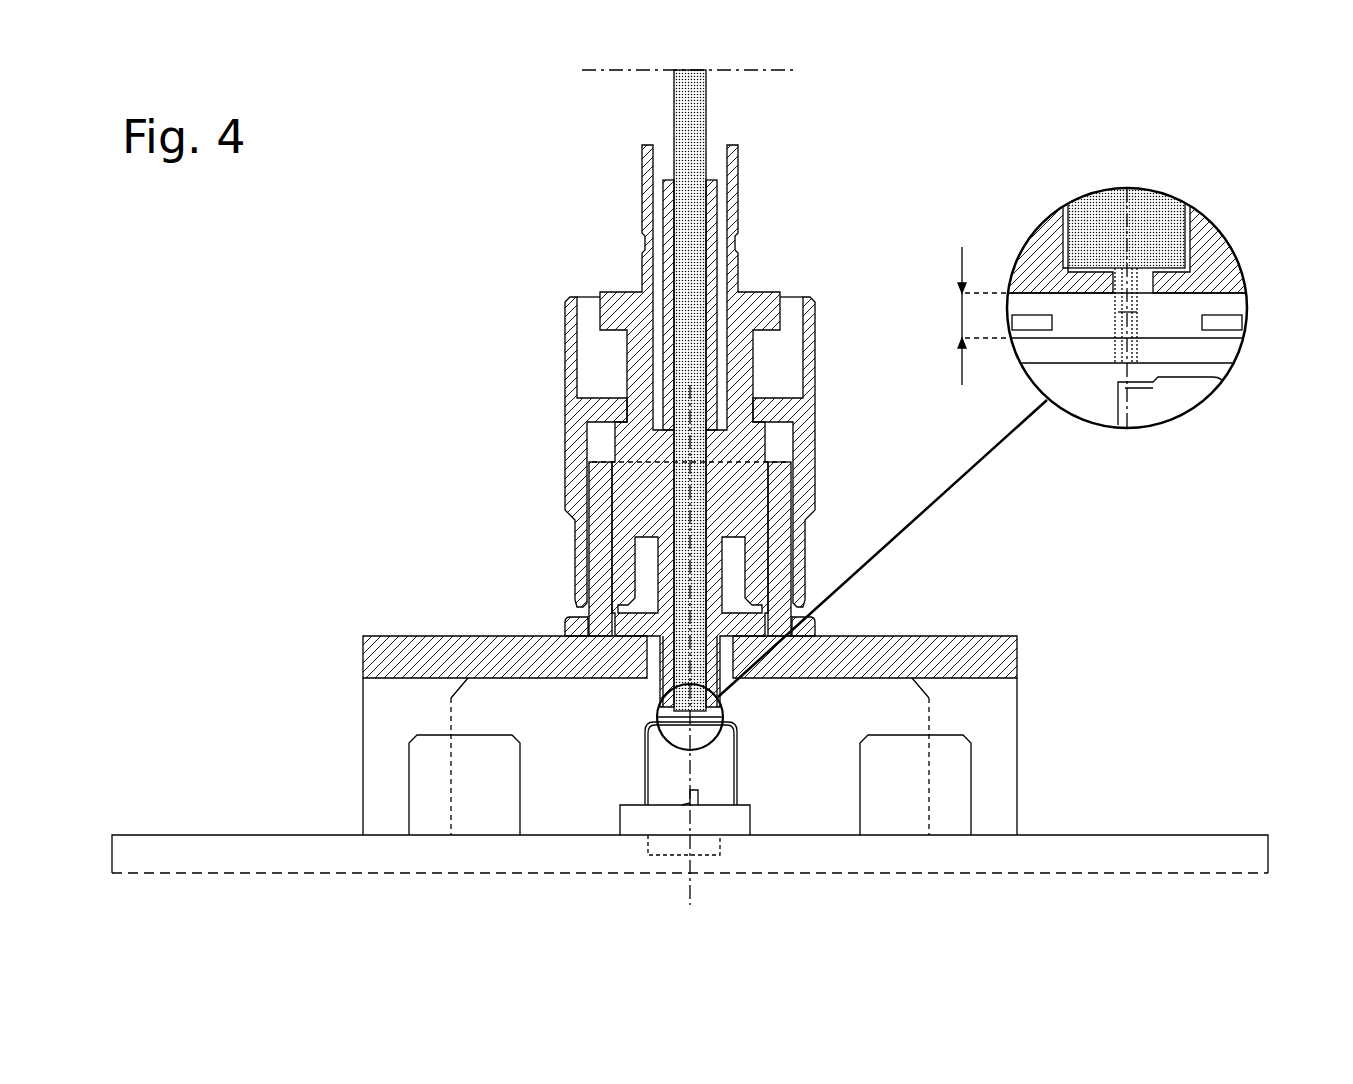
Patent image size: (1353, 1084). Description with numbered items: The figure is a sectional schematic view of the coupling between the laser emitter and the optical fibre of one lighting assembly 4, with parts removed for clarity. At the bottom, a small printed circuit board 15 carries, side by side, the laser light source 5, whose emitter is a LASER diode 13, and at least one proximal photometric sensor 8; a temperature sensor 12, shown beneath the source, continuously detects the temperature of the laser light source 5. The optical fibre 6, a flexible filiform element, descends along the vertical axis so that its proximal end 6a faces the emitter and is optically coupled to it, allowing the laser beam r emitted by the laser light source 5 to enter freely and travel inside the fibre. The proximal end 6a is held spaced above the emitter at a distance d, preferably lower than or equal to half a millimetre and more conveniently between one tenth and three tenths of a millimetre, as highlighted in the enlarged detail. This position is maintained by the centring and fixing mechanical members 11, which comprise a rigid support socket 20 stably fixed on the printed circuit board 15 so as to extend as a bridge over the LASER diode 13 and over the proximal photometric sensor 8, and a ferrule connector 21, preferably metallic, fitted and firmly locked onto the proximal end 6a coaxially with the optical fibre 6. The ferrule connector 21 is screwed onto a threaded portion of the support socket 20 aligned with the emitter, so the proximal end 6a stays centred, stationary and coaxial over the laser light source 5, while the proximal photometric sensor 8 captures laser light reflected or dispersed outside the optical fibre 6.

The lighting assembly 4 is at (701, 502).
The laser light source 5 is at (740, 778).
The optical fibre 6 is at (682, 207).
The proximal end 6a is at (1102, 272).
The proximal photometric sensor 8 is at (426, 773).
The centring and fixing mechanical members 11 is at (875, 390).
The temperature sensor 12 is at (655, 848).
The LASER diode 13 is at (660, 773).
The printed circuit board 15 is at (258, 852).
The support socket 20 is at (408, 646).
The ferrule connector 21 is at (578, 417).
The laser beam r is at (1137, 312).
The distance d is at (973, 316).